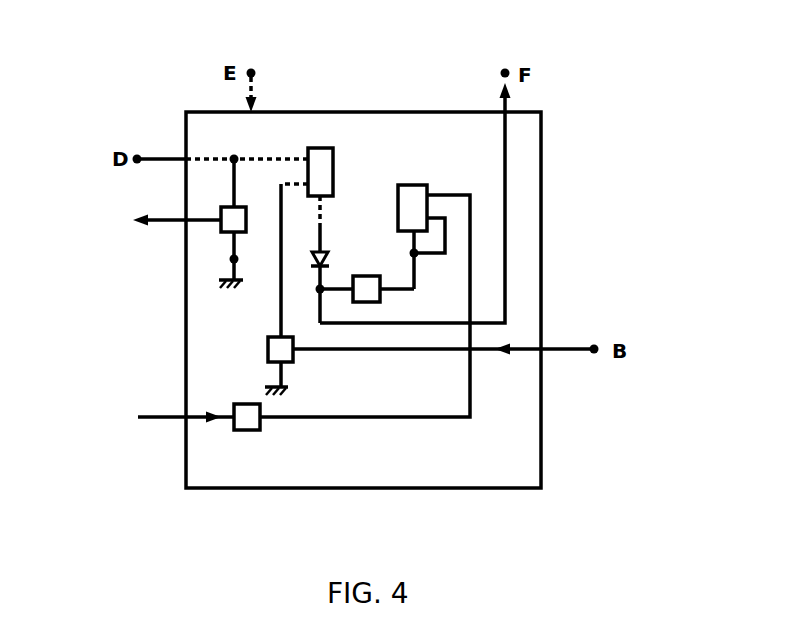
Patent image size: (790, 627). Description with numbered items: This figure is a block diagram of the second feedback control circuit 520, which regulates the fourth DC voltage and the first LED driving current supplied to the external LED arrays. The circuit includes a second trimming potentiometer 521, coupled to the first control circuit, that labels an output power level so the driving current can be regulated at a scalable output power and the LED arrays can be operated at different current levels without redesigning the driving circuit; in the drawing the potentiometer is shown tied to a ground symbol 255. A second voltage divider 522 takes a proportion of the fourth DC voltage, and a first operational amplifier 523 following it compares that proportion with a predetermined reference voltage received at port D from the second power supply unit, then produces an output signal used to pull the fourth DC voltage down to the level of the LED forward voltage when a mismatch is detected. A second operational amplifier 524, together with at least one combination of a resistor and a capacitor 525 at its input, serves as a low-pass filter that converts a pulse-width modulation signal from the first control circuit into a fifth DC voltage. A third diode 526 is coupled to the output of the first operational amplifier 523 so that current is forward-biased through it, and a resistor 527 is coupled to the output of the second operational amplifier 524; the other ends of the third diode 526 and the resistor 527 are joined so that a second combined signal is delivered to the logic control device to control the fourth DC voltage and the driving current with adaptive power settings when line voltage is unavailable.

The second feedback control circuit 520 is at (545, 410).
The second trimming potentiometer 521 is at (220, 233).
The ground 255 is at (219, 287).
The second voltage divider 522 is at (268, 347).
The first operational amplifier 523 is at (332, 148).
The second operational amplifier 524 is at (403, 185).
The combination of a resistor and a capacitor 525 is at (234, 430).
The third diode 526 is at (328, 249).
The resistor 527 is at (372, 276).